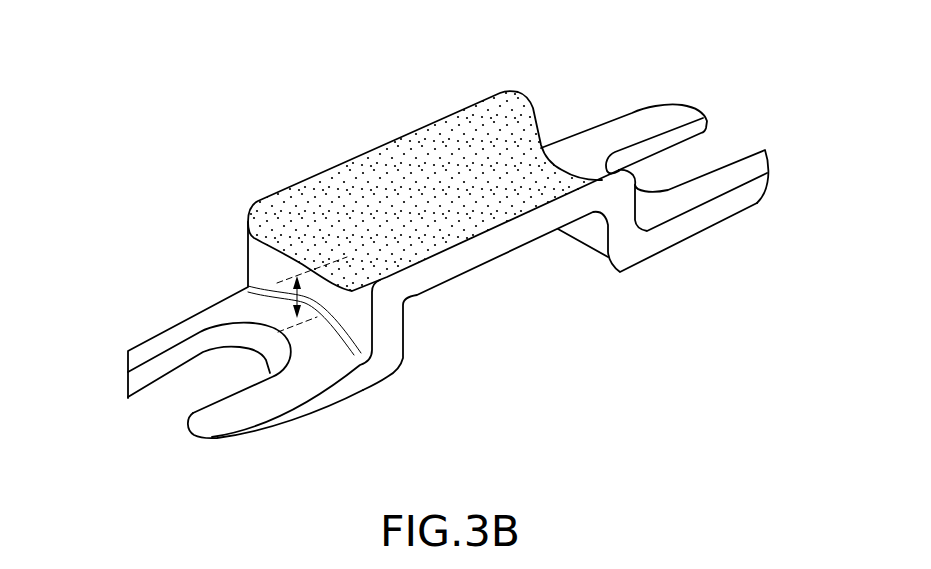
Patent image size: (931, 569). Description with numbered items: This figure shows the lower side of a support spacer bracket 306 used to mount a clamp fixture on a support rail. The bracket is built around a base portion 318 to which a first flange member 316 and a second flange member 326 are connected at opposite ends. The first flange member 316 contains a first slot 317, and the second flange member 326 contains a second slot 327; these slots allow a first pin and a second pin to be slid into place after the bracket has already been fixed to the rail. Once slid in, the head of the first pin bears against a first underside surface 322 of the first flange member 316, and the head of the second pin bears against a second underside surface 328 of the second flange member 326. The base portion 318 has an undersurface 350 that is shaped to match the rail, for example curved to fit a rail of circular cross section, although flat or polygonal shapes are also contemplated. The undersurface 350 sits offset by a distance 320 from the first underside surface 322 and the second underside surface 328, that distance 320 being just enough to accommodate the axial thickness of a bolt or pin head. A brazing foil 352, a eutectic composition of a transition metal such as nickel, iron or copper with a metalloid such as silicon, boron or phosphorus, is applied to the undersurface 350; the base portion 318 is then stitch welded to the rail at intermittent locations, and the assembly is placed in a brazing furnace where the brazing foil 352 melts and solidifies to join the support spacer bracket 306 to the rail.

The support spacer bracket 306 is at (162, 65).
The first flange member 316 is at (131, 351).
The first slot 317 is at (155, 412).
The base portion 318 is at (453, 263).
The distance 320 is at (287, 313).
The first underside surface 322 is at (302, 375).
The second flange member 326 is at (656, 104).
The second slot 327 is at (731, 131).
The second underside surface 328 is at (725, 183).
The undersurface 350 is at (318, 178).
The brazing foil 352 is at (402, 173).